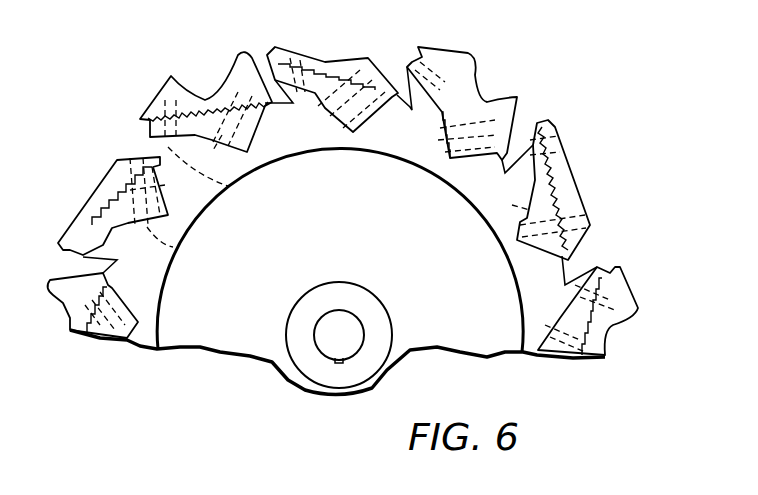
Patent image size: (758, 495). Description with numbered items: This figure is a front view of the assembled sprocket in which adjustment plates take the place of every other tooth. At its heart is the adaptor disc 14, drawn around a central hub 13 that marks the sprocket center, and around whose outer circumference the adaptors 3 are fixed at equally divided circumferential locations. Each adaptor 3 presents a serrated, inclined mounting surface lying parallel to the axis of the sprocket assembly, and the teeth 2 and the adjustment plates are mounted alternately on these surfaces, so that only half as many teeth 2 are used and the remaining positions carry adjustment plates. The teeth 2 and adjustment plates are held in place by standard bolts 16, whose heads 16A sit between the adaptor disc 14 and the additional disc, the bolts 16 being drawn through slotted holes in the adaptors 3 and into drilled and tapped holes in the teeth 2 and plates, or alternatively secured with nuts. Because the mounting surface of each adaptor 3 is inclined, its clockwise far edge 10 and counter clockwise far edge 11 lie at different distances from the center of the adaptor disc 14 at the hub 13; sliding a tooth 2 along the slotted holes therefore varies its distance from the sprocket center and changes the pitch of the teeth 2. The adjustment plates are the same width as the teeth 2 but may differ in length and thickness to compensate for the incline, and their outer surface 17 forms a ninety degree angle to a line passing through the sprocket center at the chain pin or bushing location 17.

The teeth 2 is at (243, 47).
The adaptor 3 is at (150, 122).
The clockwise far edge 10 is at (276, 104).
The counter clockwise far edge 11 is at (617, 288).
The hub with arbor bore 13 is at (390, 313).
The adaptor disc 14 is at (341, 254).
The bolts 16 is at (167, 188).
The bolt heads 16A is at (228, 186).
The outer surface of adjustment plate 17 is at (100, 185).